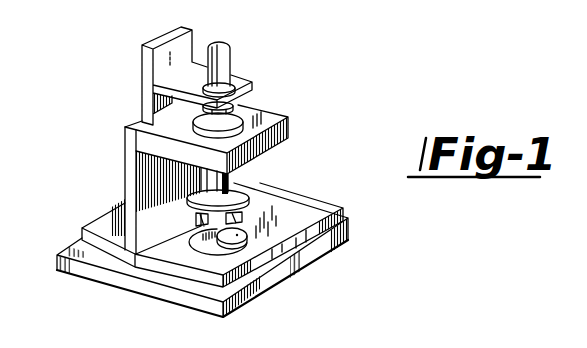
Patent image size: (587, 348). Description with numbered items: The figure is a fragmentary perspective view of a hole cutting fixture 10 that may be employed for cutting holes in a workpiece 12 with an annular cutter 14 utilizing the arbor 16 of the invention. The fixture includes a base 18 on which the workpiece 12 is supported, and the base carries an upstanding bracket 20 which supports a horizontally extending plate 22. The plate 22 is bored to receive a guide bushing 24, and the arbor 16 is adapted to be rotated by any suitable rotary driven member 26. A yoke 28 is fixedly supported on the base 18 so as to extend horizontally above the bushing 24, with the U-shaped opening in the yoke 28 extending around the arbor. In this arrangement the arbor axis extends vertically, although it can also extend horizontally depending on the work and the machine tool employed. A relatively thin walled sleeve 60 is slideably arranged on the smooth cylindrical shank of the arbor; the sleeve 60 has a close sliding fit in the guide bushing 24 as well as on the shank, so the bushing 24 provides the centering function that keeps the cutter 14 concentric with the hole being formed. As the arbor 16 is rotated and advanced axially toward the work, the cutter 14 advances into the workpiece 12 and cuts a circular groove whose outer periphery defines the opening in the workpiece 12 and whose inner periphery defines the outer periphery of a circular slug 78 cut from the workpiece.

The hole cutting fixture 10 is at (356, 222).
The workpiece 12 is at (184, 262).
The annular cutter 14 is at (249, 214).
The arbor 16 is at (245, 174).
The base 18 is at (282, 281).
The upstanding bracket 20 is at (128, 180).
The horizontally extending plate 22 is at (527, 337).
The guide bushing 24 is at (240, 122).
The rotary driven member 26 is at (231, 56).
The yoke 28 is at (178, 82).
The sleeve 60 is at (199, 121).
The circular slug 78 is at (196, 262).